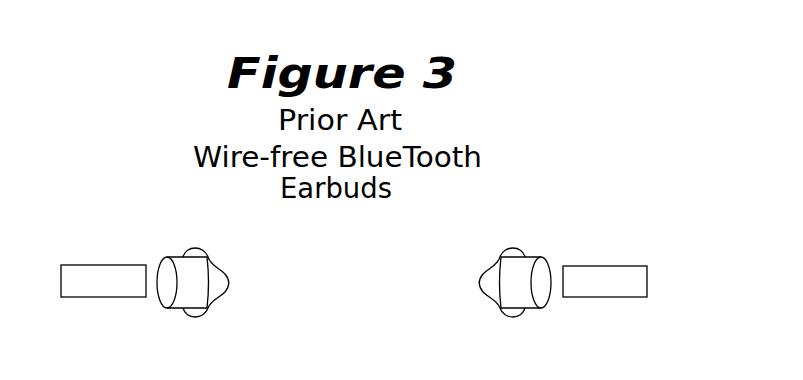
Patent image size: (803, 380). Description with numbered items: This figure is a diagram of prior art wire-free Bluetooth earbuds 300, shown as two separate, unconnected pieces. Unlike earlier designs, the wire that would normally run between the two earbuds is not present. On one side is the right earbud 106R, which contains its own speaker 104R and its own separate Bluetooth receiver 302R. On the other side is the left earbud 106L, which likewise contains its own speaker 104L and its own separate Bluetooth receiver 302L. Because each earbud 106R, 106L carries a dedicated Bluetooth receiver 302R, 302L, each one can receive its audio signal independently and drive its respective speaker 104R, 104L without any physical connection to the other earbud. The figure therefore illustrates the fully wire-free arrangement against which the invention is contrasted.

The prior art wire-free Bluetooth earbuds 300 is at (112, 118).
The speaker 104R is at (168, 257).
The earbud 106R is at (220, 265).
The Bluetooth receiver 302R is at (168, 280).
The speaker 104L is at (527, 309).
The earbud 106L is at (487, 271).
The Bluetooth receiver 302L is at (540, 280).